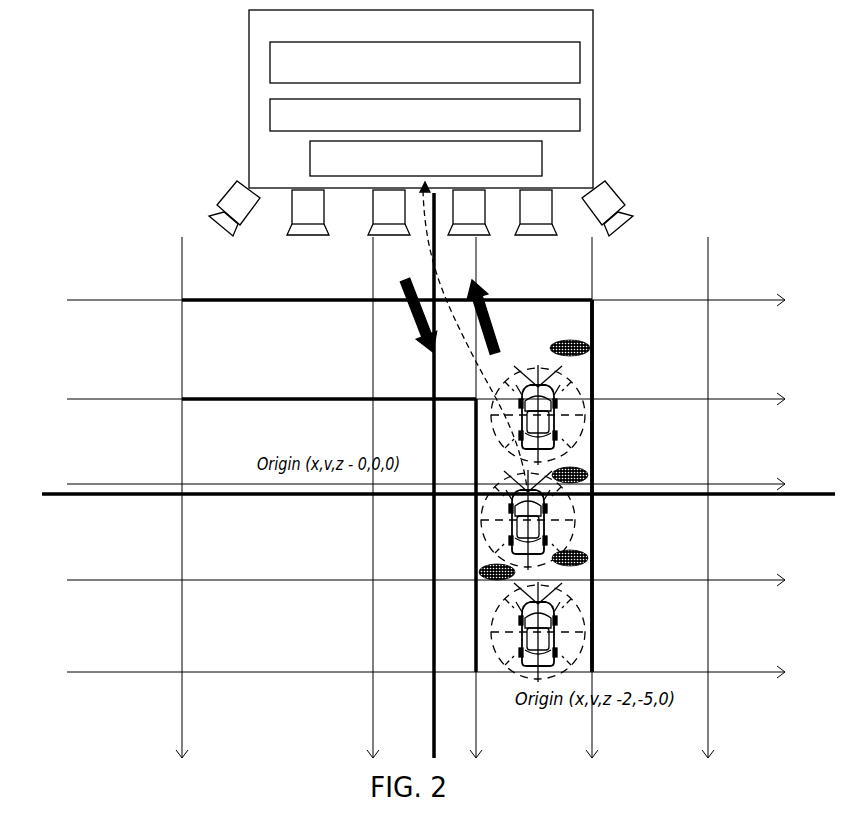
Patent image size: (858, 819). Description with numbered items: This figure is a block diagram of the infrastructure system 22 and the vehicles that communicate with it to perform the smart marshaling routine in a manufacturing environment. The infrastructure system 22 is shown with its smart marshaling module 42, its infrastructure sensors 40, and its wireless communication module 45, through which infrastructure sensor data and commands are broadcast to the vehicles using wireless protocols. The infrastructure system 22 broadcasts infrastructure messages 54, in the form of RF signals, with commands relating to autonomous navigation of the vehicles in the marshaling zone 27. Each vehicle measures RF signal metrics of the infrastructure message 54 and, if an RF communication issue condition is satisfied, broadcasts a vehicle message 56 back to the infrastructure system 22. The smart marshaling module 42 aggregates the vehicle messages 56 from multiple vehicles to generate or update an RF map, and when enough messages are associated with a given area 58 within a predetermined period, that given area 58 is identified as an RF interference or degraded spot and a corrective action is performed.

The infrastructure system 22 is at (593, 121).
The smart marshaling module 42 is at (270, 64).
The infrastructure sensors 40 is at (270, 117).
The wireless communication module 45 is at (310, 164).
The infrastructure message 54 is at (413, 325).
The vehicle message 56 is at (495, 328).
The marshaling zone 27 is at (596, 447).
The given area 58 is at (590, 338).